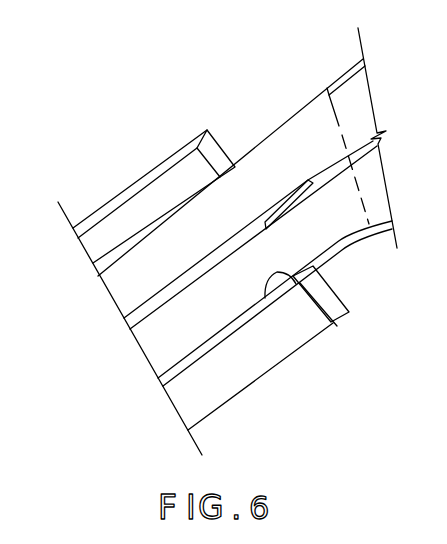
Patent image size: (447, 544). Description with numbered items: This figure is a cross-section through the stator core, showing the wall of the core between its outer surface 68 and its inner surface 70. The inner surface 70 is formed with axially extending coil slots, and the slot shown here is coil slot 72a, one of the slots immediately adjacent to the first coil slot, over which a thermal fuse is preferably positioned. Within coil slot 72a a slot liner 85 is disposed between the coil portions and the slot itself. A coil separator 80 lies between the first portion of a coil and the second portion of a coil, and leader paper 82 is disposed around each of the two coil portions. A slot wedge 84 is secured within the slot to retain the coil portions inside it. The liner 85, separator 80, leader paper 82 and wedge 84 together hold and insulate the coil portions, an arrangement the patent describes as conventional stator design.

The inner surface 70 is at (117, 197).
The slot wedge 84 is at (167, 180).
The leader paper 82 is at (107, 259).
The coil separator 80 is at (136, 318).
The slot liner 85 is at (171, 370).
The outer surface 68 is at (249, 387).
The coil slot 72a is at (333, 323).